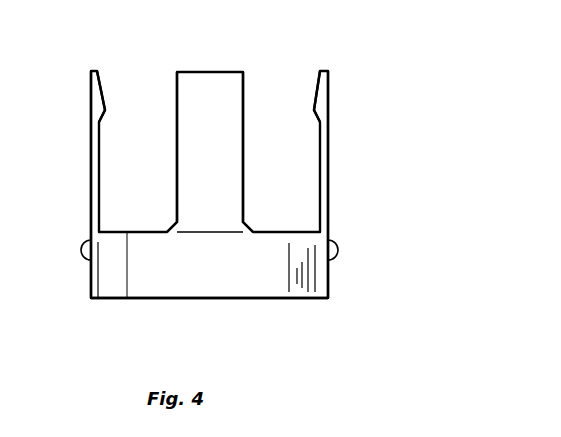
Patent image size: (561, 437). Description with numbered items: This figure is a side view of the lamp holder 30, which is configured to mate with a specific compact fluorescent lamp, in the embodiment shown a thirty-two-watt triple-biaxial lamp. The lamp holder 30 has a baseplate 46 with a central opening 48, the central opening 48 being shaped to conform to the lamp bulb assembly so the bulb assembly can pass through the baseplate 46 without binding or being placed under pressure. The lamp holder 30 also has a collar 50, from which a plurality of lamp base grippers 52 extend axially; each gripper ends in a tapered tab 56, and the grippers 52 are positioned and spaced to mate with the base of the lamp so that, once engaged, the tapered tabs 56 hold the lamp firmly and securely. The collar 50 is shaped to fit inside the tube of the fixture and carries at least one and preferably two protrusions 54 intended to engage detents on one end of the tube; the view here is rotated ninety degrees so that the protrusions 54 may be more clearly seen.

The lamp holder 30 is at (65, 32).
The baseplate 46 is at (168, 298).
The central opening 48 is at (213, 311).
The collar 50 is at (260, 288).
The lamp base grippers 52 is at (203, 86).
The protrusions 54 is at (85, 252).
The tapered tabs 56 is at (102, 86).